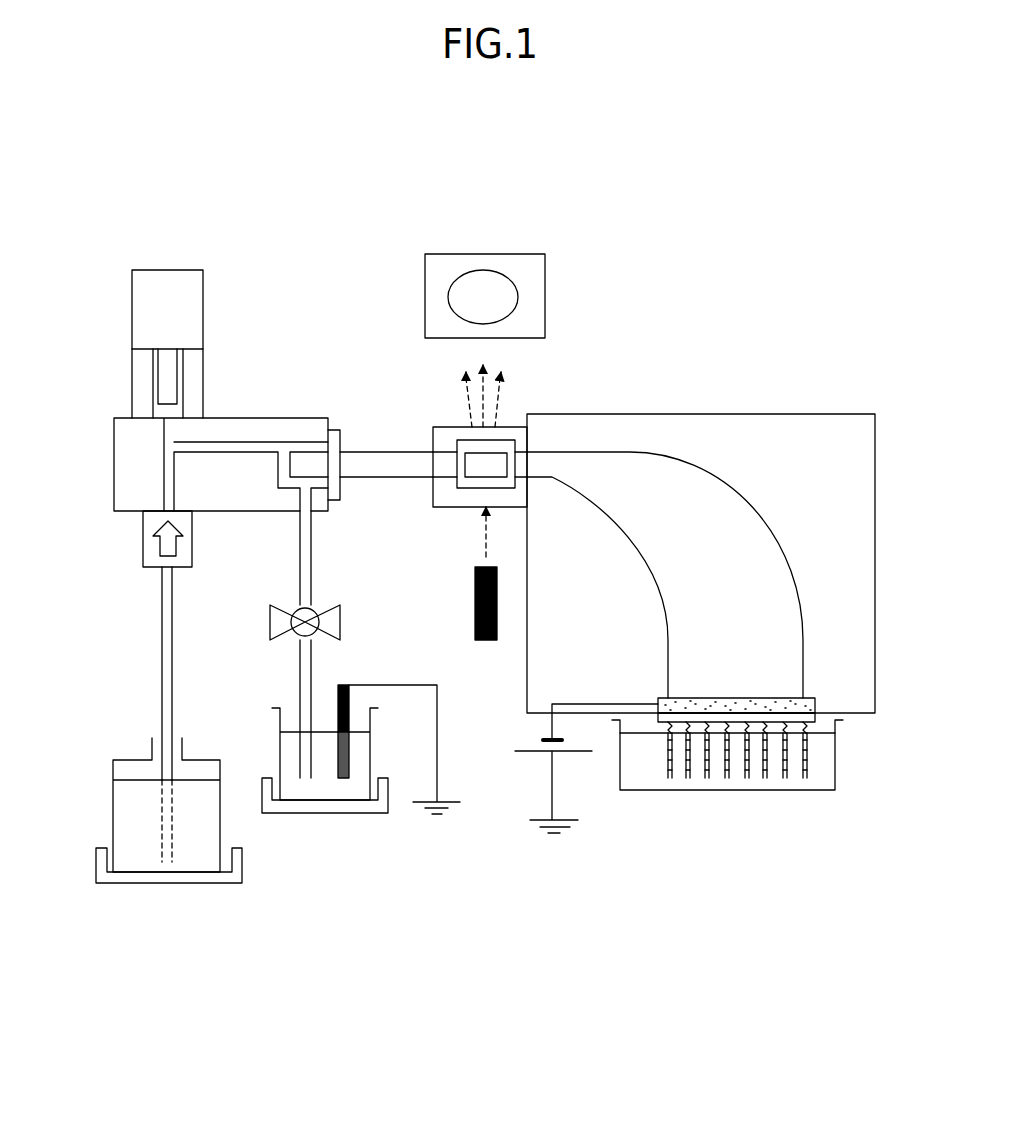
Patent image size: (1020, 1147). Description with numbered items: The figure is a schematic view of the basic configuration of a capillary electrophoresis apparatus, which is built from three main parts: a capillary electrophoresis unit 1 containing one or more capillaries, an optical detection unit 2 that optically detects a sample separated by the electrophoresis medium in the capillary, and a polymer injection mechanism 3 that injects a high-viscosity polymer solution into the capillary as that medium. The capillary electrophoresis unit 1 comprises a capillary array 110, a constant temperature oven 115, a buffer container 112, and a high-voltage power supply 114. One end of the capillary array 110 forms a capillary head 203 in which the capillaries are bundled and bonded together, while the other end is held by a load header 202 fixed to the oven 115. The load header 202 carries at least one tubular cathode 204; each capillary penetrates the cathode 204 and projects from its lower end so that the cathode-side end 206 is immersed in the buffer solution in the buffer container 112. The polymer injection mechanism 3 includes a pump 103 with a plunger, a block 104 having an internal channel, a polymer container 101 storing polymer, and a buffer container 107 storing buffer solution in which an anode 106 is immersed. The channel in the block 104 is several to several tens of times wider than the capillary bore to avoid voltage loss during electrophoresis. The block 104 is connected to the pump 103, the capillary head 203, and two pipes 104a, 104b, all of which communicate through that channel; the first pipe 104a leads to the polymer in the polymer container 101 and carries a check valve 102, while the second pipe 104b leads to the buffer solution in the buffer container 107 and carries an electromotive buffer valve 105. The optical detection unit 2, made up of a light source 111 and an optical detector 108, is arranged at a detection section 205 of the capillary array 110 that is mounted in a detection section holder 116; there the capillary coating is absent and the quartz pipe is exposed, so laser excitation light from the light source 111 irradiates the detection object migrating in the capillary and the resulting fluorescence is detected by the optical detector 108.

The capillary electrophoresis unit 1 is at (905, 475).
The optical detection unit 2 is at (578, 297).
The polymer injection mechanism 3 is at (100, 385).
The polymer container 101 is at (143, 848).
The check valve 102 is at (155, 565).
The pump 103 is at (188, 310).
The block 104 is at (218, 428).
The first pipe 104a is at (160, 679).
The second pipe 104b is at (313, 660).
The electromotive buffer valve 105 is at (333, 603).
The anode 106 is at (345, 770).
The buffer container 107 is at (290, 787).
The optical detector 108 is at (525, 265).
The capillary array 110 is at (672, 462).
The light source 111 is at (497, 585).
The buffer container 112 is at (650, 782).
The high-voltage power supply 114 is at (560, 758).
The oven 115 is at (713, 438).
The detection section holder 116 is at (432, 440).
The load header 202 is at (822, 704).
The capillary head 203 is at (308, 462).
The cathode 204 is at (838, 735).
The detection section 205 is at (503, 440).
The cathode-side end 206 is at (805, 745).